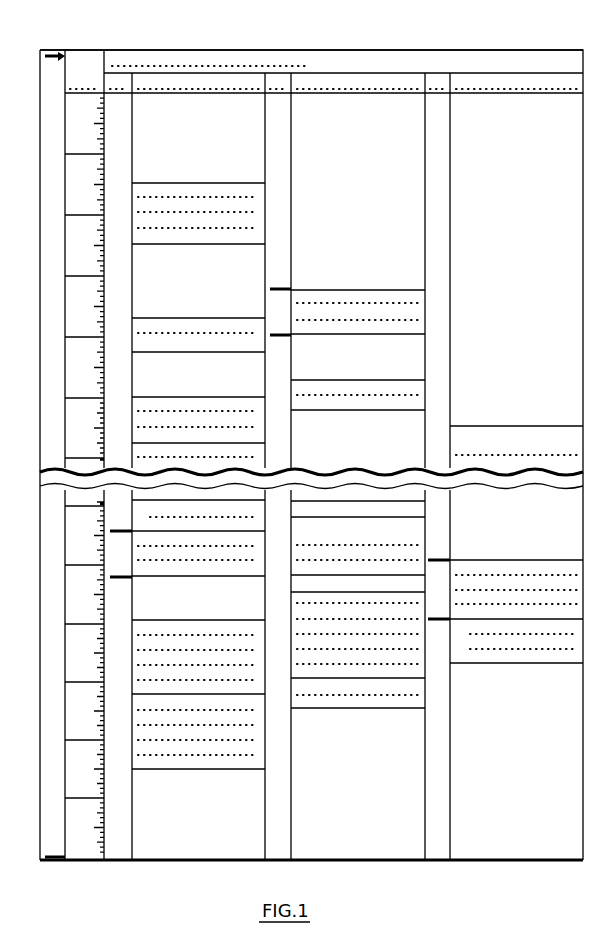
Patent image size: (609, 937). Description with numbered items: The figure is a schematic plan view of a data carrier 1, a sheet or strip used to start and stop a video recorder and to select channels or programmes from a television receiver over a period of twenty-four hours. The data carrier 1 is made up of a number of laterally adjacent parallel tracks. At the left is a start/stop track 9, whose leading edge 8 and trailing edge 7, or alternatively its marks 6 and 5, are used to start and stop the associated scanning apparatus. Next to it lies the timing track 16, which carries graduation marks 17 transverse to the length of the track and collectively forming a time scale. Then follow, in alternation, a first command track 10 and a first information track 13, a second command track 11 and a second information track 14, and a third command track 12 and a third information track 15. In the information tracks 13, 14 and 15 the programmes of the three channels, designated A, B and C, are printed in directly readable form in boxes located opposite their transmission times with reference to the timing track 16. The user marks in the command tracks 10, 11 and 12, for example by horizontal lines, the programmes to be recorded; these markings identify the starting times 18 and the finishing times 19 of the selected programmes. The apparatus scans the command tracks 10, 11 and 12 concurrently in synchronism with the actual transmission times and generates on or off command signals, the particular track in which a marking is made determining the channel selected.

The data carrier 1 is at (354, 46).
The mark 5 is at (48, 862).
The mark 6 is at (52, 61).
The trailing edge 7 is at (66, 858).
The leading edge 8 is at (66, 29).
The start/stop track 9 is at (45, 821).
The first command track 10 is at (122, 849).
The second command track 11 is at (284, 848).
The third command track 12 is at (437, 848).
The first information track 13 is at (213, 848).
The second information track 14 is at (370, 848).
The third information track 15 is at (484, 855).
The timing track 16 is at (93, 858).
The graduation marks 17 is at (103, 717).
The starting time markings 18 is at (436, 559).
The finishing time markings 19 is at (437, 642).